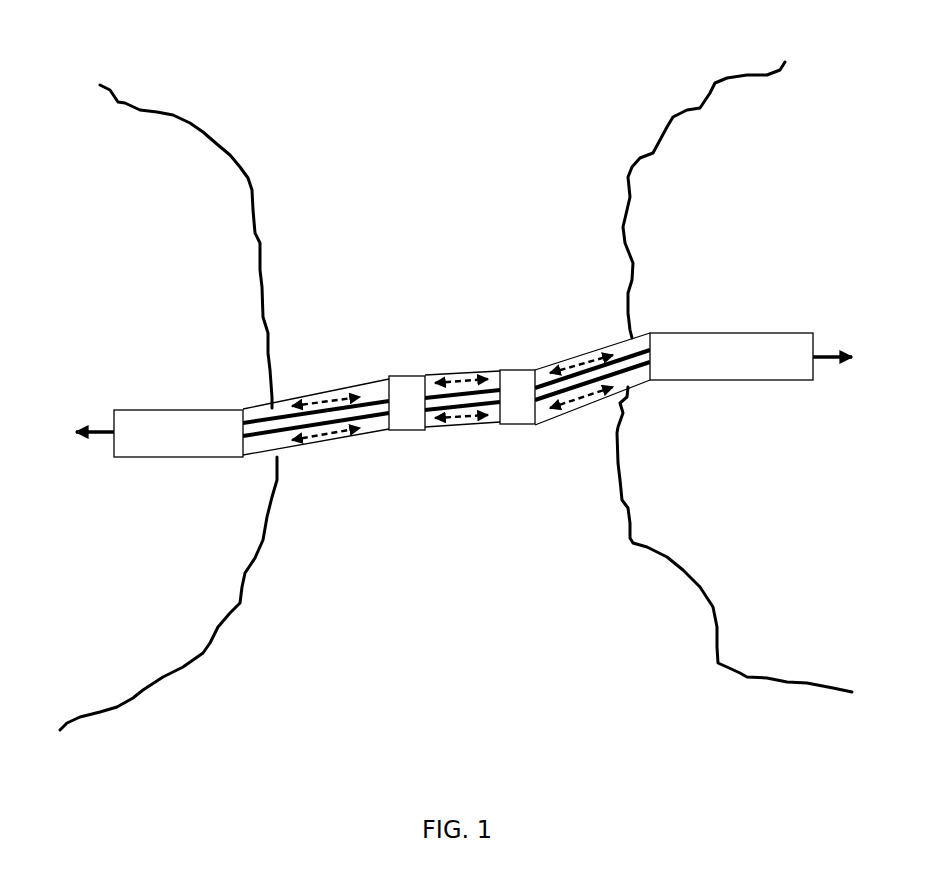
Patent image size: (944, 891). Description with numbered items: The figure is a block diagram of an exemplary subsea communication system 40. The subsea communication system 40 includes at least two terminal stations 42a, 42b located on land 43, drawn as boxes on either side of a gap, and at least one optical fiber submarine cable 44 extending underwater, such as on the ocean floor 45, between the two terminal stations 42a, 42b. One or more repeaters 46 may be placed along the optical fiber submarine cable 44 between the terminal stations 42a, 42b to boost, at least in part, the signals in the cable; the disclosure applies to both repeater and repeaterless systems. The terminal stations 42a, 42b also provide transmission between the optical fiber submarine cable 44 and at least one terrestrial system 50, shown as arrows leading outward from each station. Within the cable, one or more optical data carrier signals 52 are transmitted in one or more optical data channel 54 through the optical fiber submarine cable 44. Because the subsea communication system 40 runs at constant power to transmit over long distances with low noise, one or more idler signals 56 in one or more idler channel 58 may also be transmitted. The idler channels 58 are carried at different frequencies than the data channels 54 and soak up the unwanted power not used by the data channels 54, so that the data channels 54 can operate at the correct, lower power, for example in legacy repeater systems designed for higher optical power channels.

The subsea communication system 40 is at (450, 62).
The terminal station 42a is at (200, 449).
The terminal station 42b is at (755, 374).
The land 43 is at (190, 255).
The optical fiber submarine cable 44 is at (470, 428).
The ocean floor 45 is at (440, 229).
The repeater 46 is at (413, 376).
The terrestrial system 50 is at (93, 441).
The optical data carrier signal 52 is at (323, 402).
The optical data channel 54 is at (373, 404).
The idler signal 56 is at (312, 443).
The idler channel 58 is at (371, 416).